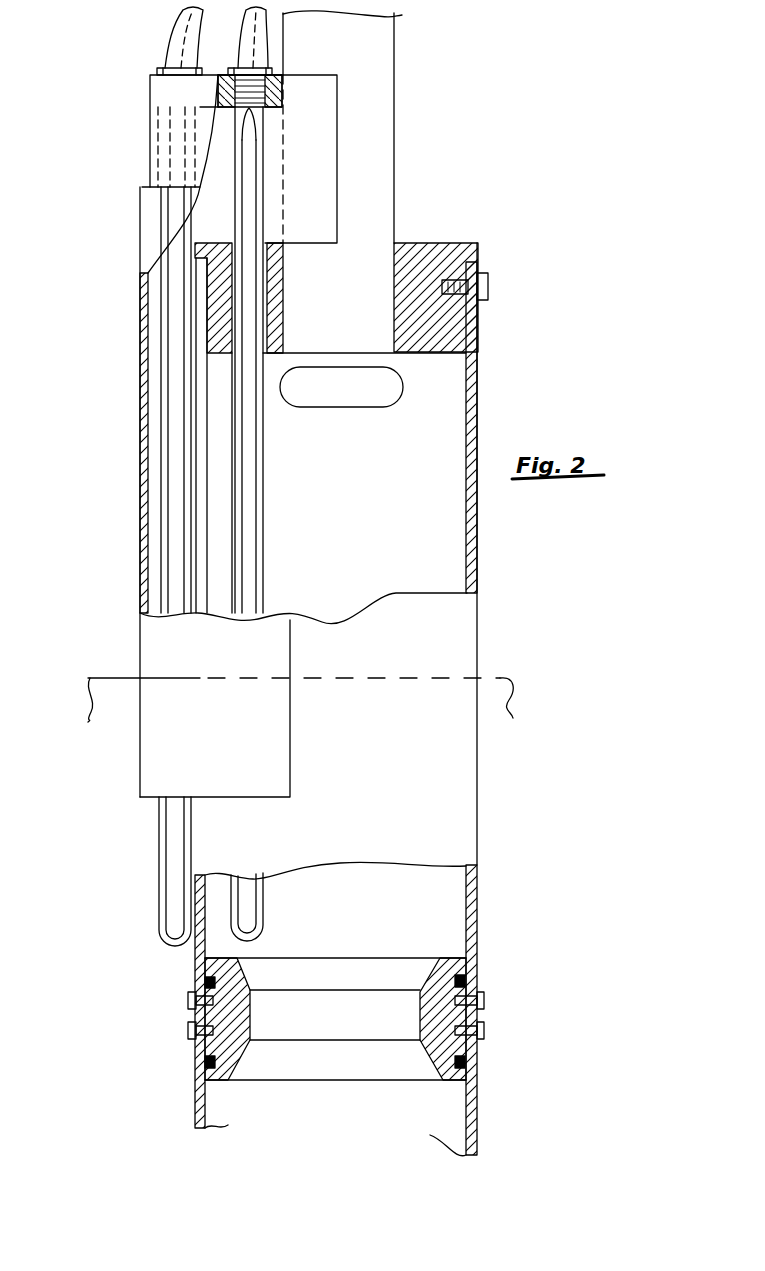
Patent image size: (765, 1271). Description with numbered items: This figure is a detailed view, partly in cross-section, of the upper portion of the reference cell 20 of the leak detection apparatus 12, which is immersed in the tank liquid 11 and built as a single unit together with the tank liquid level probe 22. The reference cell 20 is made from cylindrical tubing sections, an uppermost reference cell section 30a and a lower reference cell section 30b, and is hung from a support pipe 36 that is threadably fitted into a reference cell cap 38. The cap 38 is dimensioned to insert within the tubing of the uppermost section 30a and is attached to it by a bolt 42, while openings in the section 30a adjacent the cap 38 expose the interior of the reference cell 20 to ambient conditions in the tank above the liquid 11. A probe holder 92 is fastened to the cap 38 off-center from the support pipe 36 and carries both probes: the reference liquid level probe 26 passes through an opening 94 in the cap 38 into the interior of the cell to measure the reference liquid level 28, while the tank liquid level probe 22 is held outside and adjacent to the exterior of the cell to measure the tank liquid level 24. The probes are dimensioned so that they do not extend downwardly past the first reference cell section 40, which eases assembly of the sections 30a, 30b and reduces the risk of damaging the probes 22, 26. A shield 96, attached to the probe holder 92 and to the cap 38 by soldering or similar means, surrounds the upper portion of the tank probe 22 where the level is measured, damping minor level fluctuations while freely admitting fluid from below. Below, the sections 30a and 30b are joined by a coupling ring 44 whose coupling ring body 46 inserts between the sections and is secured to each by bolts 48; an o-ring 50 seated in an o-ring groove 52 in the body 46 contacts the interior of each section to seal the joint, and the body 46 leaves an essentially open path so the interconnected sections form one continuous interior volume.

The liquid 11 is at (68, 878).
The leak detection apparatus 12 is at (470, 97).
The reference cell 20 is at (474, 207).
The tank liquid level probe 22 is at (162, 562).
The tank liquid level 24 is at (107, 681).
The reference liquid level probe 26 is at (264, 503).
The liquid level in the reference cell 28 is at (340, 681).
The uppermost reference cell section 30a is at (440, 793).
The lower reference cell section 30b is at (480, 1121).
The support pipe 36 is at (381, 113).
The reference cell cap 38 is at (421, 242).
The first reference cell section 40 is at (404, 388).
The bolt 42 is at (490, 284).
The coupling ring 44 is at (484, 983).
The coupling ring body 46 is at (428, 988).
The bolts 48 is at (190, 1031).
The o-ring 50 is at (205, 983).
The o-ring groove 52 is at (216, 980).
The probe holder 92 is at (150, 90).
The opening 94 is at (272, 353).
The shield 96 is at (172, 760).